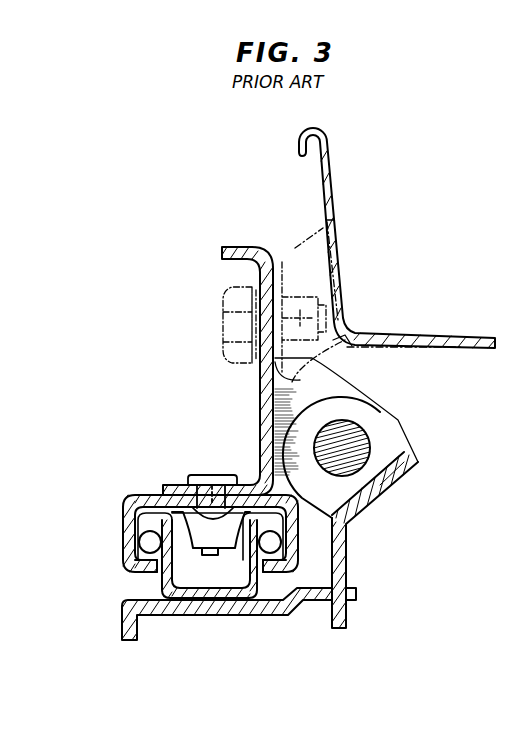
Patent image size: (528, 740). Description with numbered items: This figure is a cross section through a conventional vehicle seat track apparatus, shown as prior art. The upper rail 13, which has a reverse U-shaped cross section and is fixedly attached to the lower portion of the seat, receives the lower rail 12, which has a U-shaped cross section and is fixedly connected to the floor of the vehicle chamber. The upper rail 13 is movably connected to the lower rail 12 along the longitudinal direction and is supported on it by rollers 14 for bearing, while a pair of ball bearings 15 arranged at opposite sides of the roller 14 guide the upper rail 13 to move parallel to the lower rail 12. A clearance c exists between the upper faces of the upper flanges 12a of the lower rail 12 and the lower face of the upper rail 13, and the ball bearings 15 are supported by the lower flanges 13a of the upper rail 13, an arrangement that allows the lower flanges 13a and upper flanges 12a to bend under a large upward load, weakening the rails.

The lower rail 12 is at (168, 590).
The upper flanges 12a is at (135, 512).
The upper rail 13 is at (140, 503).
The lower flanges 13a is at (137, 566).
The rollers 14 is at (232, 575).
The ball bearings 15 is at (143, 542).
The clearance c is at (175, 522).